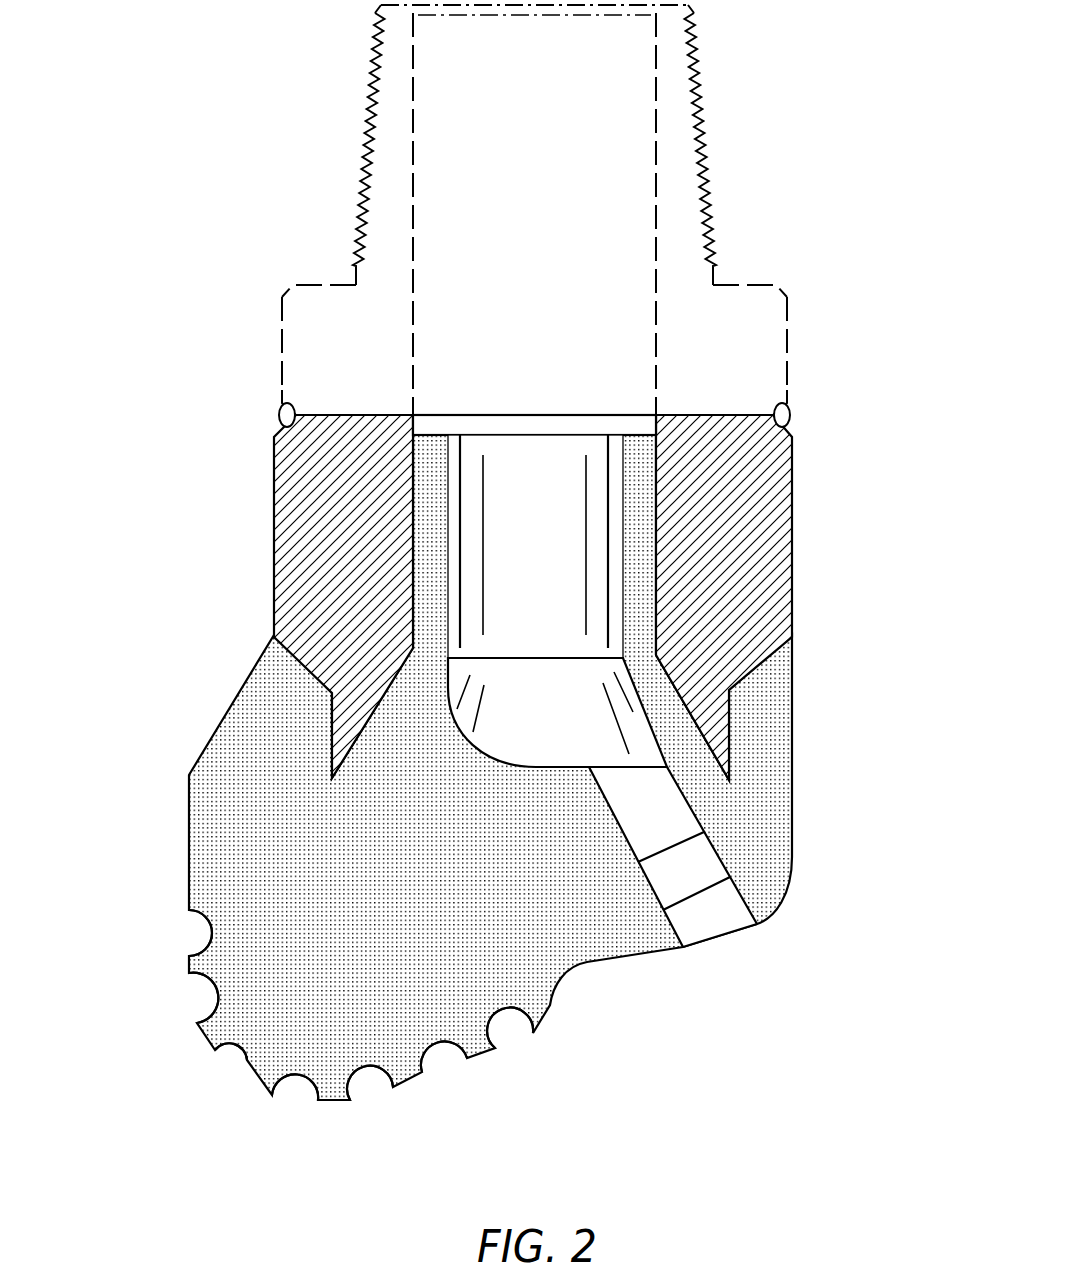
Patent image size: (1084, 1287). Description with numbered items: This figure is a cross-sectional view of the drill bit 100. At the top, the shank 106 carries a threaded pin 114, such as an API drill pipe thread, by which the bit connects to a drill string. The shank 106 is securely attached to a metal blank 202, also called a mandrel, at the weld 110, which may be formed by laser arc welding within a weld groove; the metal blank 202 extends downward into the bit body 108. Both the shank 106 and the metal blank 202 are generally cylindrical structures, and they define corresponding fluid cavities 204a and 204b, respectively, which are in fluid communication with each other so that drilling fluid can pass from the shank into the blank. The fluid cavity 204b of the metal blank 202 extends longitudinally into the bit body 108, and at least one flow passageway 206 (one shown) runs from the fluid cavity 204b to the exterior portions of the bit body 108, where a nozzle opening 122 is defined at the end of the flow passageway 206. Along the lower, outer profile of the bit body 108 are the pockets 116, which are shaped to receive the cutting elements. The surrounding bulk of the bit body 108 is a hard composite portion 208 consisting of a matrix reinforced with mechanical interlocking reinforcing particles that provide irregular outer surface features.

The drill bit 100 is at (750, 88).
The shank 106 is at (805, 324).
The bit body 108 is at (502, 782).
The weld 110 is at (278, 417).
The threaded pin 114 is at (367, 180).
The pockets 116 is at (189, 936).
The nozzle openings 122 is at (683, 947).
The metal blank 202 is at (742, 561).
The fluid cavity 204a is at (565, 226).
The fluid cavity 204b is at (566, 561).
The flow passageway 206 is at (735, 935).
The hard composite portion 208 is at (374, 903).